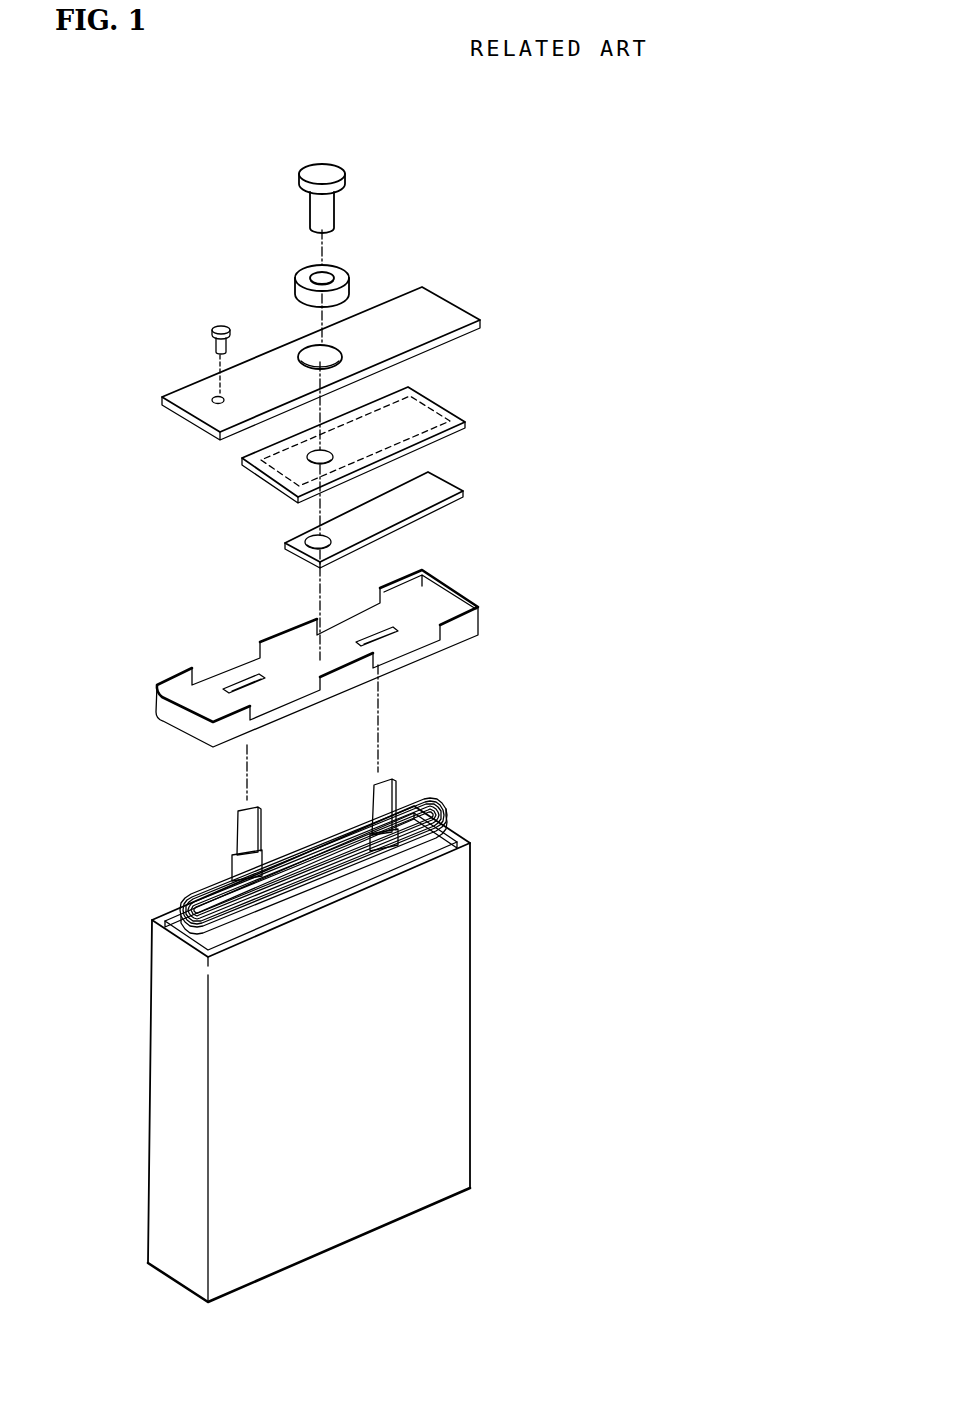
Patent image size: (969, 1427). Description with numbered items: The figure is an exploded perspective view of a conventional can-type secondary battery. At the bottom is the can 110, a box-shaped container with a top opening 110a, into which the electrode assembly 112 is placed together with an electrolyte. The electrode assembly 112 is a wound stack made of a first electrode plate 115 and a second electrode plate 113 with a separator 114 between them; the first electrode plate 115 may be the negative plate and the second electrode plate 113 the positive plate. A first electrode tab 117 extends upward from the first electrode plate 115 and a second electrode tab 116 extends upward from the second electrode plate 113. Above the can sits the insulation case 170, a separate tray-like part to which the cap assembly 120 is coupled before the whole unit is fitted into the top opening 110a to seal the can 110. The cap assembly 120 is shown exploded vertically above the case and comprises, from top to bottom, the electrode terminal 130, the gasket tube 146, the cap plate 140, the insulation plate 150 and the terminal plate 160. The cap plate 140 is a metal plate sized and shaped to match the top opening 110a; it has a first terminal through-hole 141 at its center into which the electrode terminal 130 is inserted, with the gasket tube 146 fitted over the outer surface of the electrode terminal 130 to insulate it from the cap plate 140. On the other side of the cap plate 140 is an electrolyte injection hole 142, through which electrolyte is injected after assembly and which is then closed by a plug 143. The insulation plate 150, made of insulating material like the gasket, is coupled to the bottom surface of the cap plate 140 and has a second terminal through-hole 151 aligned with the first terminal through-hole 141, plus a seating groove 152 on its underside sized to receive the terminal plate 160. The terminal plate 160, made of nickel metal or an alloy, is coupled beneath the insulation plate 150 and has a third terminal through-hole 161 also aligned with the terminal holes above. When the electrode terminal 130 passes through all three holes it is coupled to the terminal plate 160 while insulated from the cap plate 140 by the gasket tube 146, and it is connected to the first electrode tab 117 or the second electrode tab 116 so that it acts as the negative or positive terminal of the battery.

The can 110 is at (446, 1008).
The top opening 110a is at (456, 840).
The electrode assembly 112 is at (512, 757).
The second electrode plate 113 is at (446, 830).
The separator 114 is at (429, 817).
The first electrode plate 115 is at (414, 816).
The second electrode tab 116 is at (243, 847).
The first electrode tab 117 is at (372, 807).
The cap assembly 120 is at (549, 163).
The electrode terminal 130 is at (332, 173).
The cap plate 140 is at (433, 308).
The first terminal through-hole 141 is at (310, 351).
The electrolyte injection hole 142 is at (214, 398).
The plug 143 is at (214, 330).
The gasket tube 146 is at (303, 279).
The insulation plate 150 is at (437, 412).
The second terminal through-hole 151 is at (314, 463).
The seating groove 152 is at (250, 469).
The terminal plate 160 is at (437, 489).
The third terminal through-hole 161 is at (302, 545).
The insulation case 170 is at (162, 707).